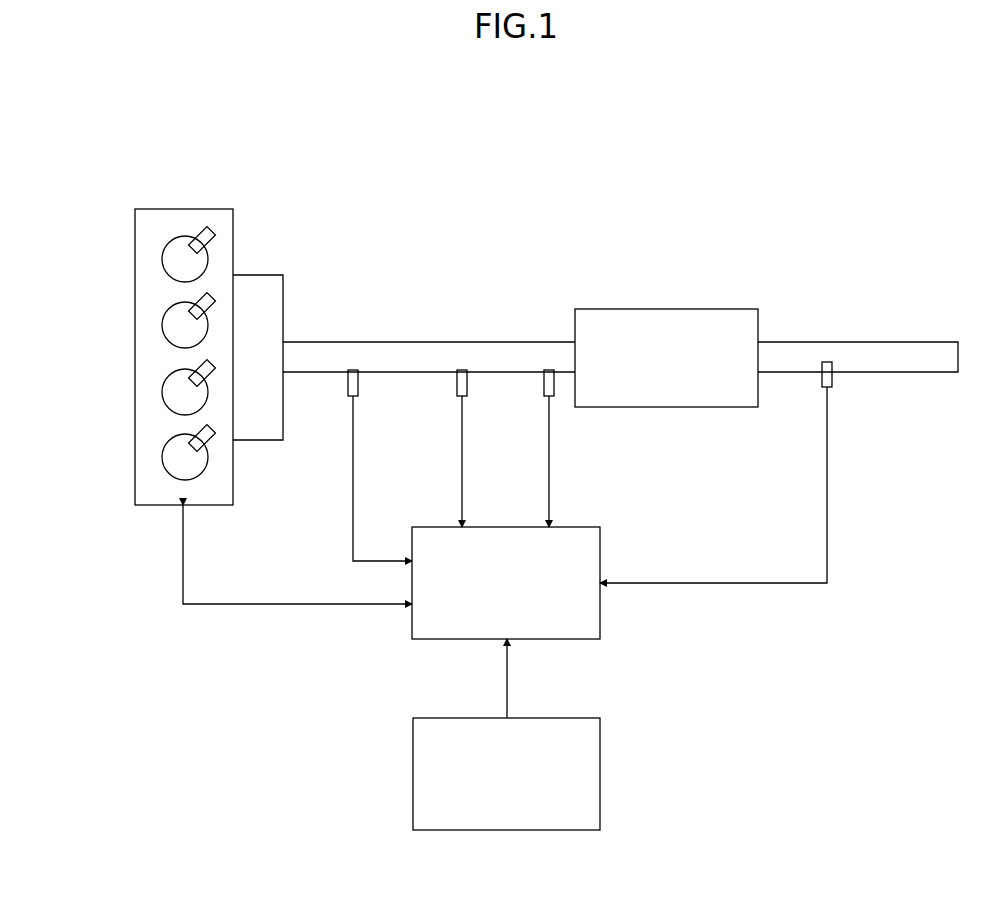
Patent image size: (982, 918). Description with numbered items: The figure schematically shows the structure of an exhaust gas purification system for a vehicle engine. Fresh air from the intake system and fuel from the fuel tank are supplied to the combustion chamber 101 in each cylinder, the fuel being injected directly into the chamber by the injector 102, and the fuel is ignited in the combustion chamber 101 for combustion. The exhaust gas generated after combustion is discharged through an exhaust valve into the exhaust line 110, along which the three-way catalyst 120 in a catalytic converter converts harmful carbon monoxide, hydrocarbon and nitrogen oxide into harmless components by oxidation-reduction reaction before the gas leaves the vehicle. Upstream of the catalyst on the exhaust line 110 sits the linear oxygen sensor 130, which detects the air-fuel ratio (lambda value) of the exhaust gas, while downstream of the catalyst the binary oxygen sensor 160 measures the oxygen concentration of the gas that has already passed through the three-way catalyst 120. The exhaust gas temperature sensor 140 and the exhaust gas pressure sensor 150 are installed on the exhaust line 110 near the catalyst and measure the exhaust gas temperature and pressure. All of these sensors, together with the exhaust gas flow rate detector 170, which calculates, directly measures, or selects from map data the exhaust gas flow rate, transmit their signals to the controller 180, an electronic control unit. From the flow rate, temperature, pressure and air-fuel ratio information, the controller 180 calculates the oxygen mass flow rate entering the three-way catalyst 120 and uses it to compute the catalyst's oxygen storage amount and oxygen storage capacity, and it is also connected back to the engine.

The combustion chamber 101 is at (162, 257).
The injector 102 is at (212, 230).
The exhaust line 110 is at (183, 209).
The three-way catalyst 120 is at (665, 309).
The linear oxygen sensor 130 is at (357, 397).
The exhaust gas temperature sensor 140 is at (466, 397).
The exhaust gas pressure sensor 150 is at (553, 397).
The binary oxygen sensor 160 is at (831, 388).
The exhaust gas flow rate detector 170 is at (600, 770).
The controller 180 is at (600, 545).